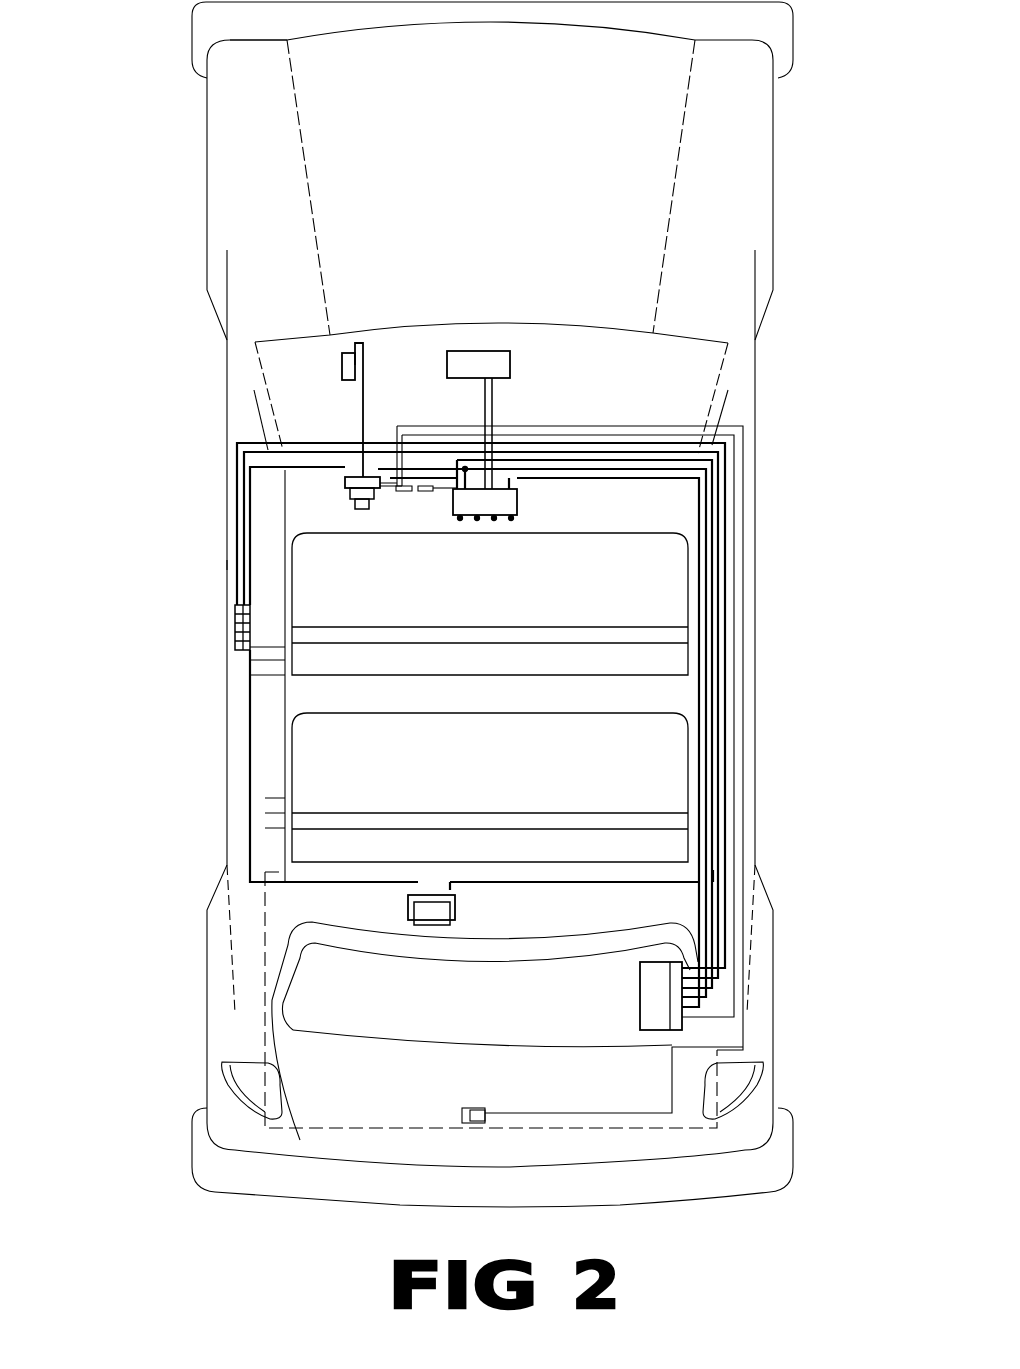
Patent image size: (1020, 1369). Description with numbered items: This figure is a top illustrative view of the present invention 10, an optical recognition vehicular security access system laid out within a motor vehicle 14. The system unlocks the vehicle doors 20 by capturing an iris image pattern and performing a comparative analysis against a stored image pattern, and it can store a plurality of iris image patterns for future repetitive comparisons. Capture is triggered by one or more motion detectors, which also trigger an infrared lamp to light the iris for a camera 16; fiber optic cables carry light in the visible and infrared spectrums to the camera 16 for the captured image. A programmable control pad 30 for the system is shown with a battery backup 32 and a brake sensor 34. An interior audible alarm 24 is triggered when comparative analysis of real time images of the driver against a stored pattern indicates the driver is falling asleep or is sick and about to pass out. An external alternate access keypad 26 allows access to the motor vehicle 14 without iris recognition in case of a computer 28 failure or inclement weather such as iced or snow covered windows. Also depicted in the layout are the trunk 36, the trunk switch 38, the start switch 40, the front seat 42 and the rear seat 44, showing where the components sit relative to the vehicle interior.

The present invention 10 is at (795, 434).
The motor vehicle 14 is at (747, 172).
The camera 16 is at (347, 500).
The vehicle doors 20 is at (230, 565).
The interior audible alarm 24 is at (430, 908).
The external alternate access keypad 26 is at (235, 618).
The computer 28 is at (673, 1010).
The programmable control pad 30 is at (493, 505).
The battery backup 32 is at (501, 350).
The brake sensor 34 is at (347, 368).
The trunk 36 is at (308, 1057).
The trunk switch 38 is at (398, 490).
The start switch 40 is at (420, 490).
The front seat 42 is at (617, 580).
The rear seat 44 is at (598, 765).